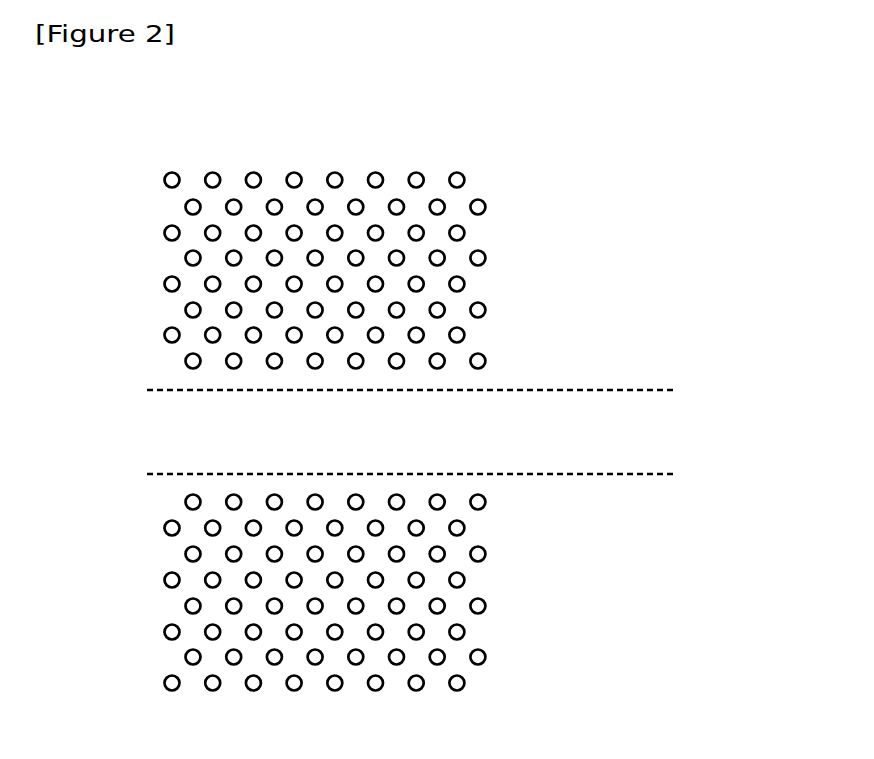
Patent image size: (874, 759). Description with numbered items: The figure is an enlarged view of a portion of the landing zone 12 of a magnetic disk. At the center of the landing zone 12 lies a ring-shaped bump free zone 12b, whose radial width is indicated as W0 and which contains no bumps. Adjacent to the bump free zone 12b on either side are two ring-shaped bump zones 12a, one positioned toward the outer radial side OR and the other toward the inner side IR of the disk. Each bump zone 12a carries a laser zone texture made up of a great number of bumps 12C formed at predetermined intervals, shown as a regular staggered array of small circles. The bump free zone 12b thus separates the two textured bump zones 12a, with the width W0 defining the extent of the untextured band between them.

The landing zone 12 is at (339, 138).
The bump zone 12a is at (469, 418).
The bump free zone 12b is at (692, 390).
The bump 12C is at (478, 207).
The width of bump free zone W0 is at (623, 391).
The outer radial side OR is at (782, 140).
The inner side IR is at (786, 638).